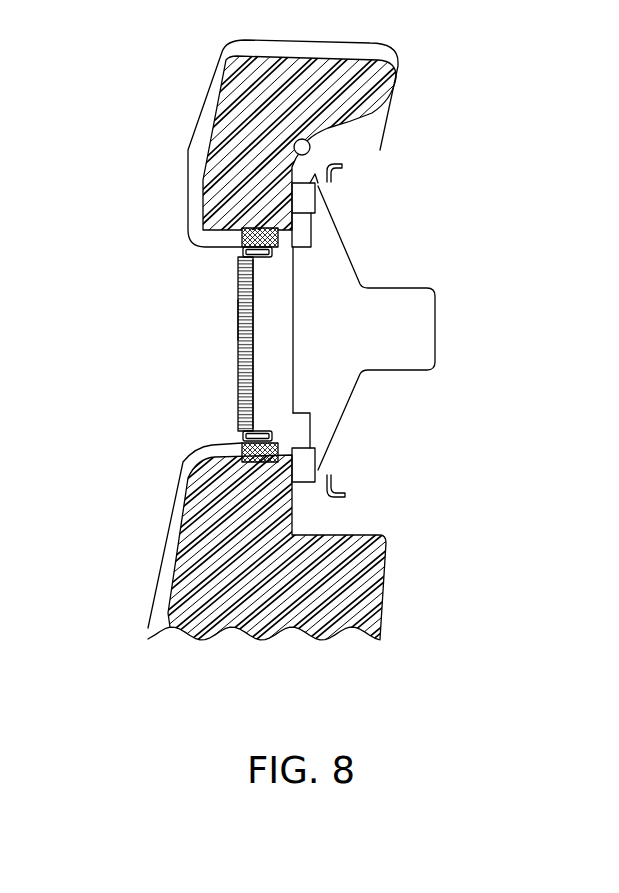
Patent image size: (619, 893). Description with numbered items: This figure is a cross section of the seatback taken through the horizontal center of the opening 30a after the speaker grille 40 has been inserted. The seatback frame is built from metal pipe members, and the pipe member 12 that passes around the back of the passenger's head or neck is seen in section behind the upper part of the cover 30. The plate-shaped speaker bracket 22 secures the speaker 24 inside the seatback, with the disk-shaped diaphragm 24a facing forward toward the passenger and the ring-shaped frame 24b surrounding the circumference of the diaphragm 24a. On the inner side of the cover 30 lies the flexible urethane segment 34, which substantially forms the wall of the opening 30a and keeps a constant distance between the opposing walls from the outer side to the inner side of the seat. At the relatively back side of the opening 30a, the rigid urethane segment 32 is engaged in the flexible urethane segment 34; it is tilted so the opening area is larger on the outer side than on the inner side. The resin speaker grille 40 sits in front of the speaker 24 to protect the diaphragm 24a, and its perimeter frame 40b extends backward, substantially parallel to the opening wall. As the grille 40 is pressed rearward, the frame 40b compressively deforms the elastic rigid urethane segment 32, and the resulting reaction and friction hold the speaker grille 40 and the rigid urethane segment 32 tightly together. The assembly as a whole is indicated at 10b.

The sealing structure 10b is at (493, 52).
The pipe member 12 is at (312, 146).
The speaker bracket 22 is at (343, 166).
The speaker 24 is at (446, 296).
The diaphragm 24a is at (238, 347).
The frame 24b is at (318, 186).
The cover 30 is at (187, 160).
The opening 30a is at (222, 312).
The rigid urethane segment 32 is at (240, 240).
The flexible urethane segment 34 is at (204, 104).
The speaker grille 40 is at (236, 326).
The frame 40b is at (243, 260).